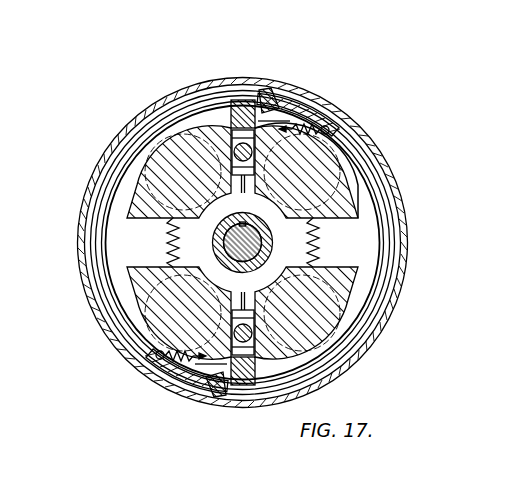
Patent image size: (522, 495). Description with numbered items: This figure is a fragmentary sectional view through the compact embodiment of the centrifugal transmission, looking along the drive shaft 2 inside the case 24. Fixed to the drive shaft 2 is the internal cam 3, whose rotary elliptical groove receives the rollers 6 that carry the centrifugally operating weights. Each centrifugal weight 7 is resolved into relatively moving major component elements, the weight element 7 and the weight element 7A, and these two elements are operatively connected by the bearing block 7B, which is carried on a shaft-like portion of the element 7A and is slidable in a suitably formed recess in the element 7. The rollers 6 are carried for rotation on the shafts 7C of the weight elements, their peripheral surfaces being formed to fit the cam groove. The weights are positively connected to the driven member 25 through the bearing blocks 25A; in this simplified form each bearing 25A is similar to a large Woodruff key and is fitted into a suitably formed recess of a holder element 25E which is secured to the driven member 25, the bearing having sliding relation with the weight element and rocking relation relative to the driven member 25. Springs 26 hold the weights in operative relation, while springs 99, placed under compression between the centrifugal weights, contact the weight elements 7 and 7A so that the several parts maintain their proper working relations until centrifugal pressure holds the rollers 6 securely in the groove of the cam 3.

The drive shaft 2 is at (264, 245).
The internal cam 3 is at (100, 195).
The rollers 6 is at (137, 182).
The centrifugal weight 7 is at (250, 99).
The weight component element 7A is at (153, 110).
The bearing block 7B is at (190, 93).
The shafts 7C is at (150, 170).
The case 24 is at (352, 150).
The driven member 25 is at (350, 172).
The bearing block 25A is at (271, 94).
The holder element 25E is at (283, 90).
The springs 26 is at (336, 124).
The springs 99 is at (167, 245).